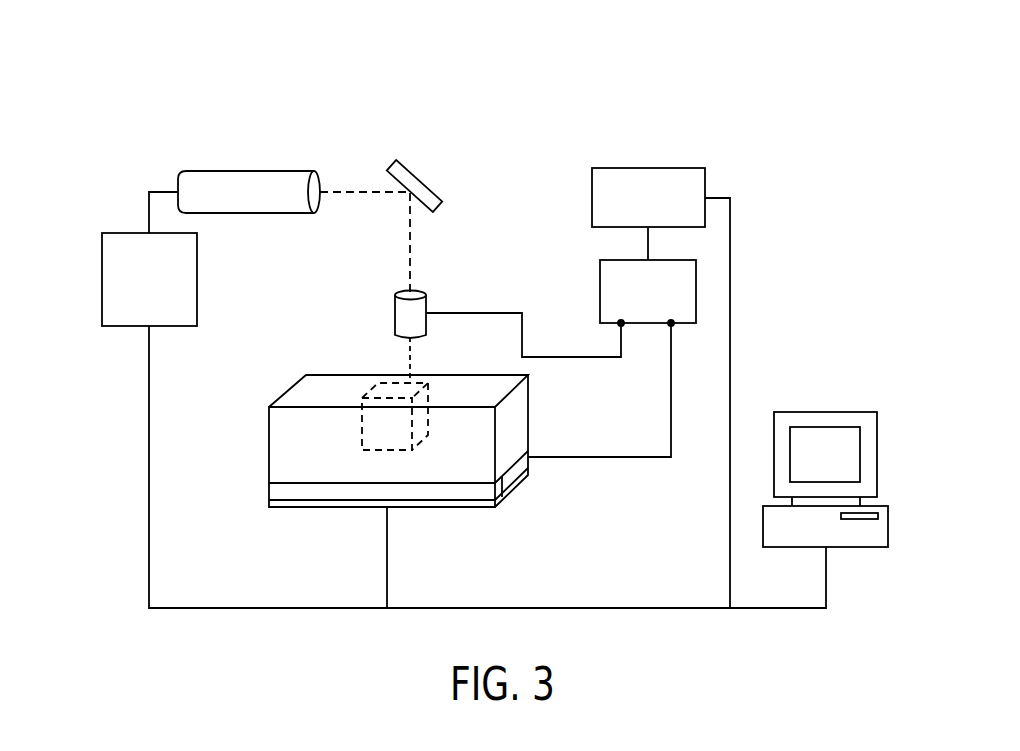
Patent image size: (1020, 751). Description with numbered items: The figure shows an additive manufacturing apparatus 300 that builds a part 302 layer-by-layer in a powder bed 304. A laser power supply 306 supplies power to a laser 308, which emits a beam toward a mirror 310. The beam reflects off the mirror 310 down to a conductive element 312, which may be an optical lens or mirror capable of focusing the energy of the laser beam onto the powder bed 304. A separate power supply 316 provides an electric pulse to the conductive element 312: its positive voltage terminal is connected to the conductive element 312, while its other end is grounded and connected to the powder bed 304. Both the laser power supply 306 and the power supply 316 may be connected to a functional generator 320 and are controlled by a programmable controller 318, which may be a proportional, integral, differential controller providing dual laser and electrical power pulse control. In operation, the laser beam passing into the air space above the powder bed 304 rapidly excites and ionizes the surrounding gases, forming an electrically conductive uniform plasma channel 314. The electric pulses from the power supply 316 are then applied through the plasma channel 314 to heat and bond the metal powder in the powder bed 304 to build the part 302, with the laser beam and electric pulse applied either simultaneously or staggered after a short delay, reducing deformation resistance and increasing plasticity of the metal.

The apparatus 300 is at (598, 100).
The part 302 is at (400, 423).
The powder bed 304 is at (283, 459).
The laser power supply 306 is at (102, 280).
The laser 308 is at (282, 172).
The mirror 310 is at (406, 166).
The conductive element 312 is at (426, 302).
The plasma channel 314 is at (402, 365).
The power supply 316 is at (600, 286).
The programmable controller 318 is at (850, 412).
The functional generator 320 is at (667, 168).